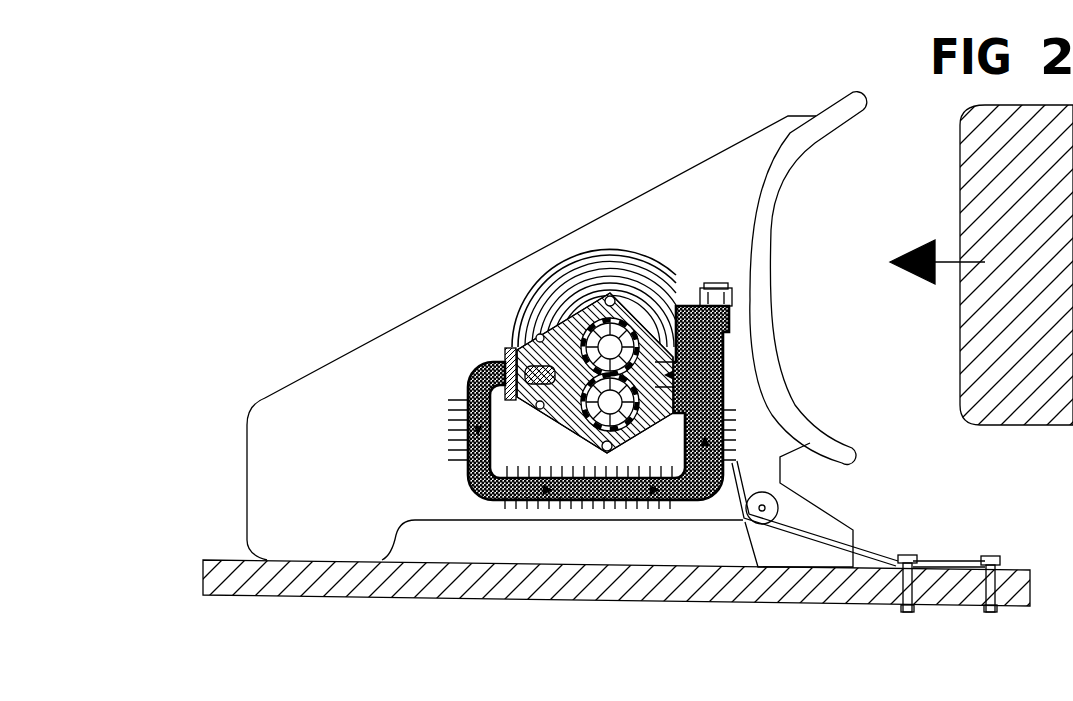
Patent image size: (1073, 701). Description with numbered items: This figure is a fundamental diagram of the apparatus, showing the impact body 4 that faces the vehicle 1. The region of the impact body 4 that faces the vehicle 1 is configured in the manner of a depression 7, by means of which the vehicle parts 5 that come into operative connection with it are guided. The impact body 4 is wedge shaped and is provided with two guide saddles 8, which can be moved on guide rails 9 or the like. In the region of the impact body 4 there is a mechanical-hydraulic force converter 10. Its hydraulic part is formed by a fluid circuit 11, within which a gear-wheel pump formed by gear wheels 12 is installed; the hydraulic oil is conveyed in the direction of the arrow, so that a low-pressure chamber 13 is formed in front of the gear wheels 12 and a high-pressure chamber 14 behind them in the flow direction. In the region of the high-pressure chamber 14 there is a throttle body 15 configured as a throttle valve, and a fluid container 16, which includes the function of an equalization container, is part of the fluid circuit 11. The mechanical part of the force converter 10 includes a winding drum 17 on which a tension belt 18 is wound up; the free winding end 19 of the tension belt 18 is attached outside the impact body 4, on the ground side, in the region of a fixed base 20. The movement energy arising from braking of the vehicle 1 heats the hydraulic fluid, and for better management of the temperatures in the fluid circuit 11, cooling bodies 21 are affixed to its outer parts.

The vehicle 1 is at (1062, 140).
The impact body 4 is at (730, 205).
The vehicle parts 5 is at (967, 307).
The depression 7 is at (760, 247).
The guide saddles 8 is at (343, 540).
The guide rails 9 is at (302, 580).
The mechanical-hydraulic force converter 10 is at (508, 343).
The fluid circuit 11 is at (470, 380).
The gear wheels 12 is at (627, 295).
The low-pressure chamber 13 is at (660, 383).
The high-pressure chamber 14 is at (535, 295).
The throttle body 15 is at (510, 348).
The fluid container 16 is at (735, 310).
The winding drum 17 is at (555, 268).
The tension belt 18 is at (590, 250).
The free winding end 19 is at (930, 563).
The fixed base 20 is at (977, 563).
The cooling bodies 21 is at (733, 443).